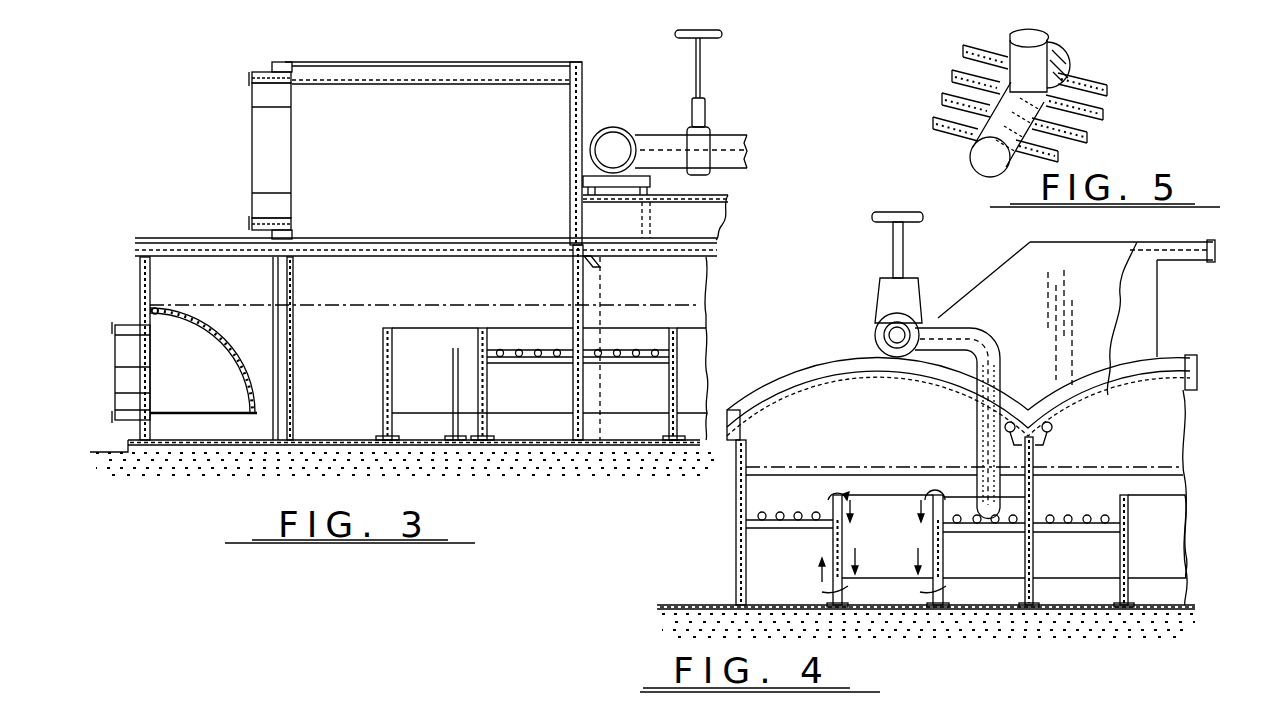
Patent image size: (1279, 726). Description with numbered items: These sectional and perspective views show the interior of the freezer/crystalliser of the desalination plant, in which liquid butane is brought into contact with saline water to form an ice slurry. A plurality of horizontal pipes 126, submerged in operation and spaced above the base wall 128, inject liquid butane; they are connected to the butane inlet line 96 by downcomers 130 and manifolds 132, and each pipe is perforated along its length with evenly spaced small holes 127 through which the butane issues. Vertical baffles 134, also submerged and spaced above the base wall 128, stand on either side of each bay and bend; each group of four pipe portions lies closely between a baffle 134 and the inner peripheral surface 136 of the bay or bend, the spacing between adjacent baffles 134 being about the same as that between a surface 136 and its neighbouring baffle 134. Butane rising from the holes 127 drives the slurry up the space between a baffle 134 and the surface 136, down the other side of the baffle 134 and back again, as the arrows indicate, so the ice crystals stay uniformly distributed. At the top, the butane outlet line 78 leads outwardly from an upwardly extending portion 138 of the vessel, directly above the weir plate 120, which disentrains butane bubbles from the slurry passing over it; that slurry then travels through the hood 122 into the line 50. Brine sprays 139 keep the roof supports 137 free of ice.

In FIG. 3, the line 50 is at (127, 323).
In FIG. 3, the butane outlet line 78 is at (268, 78).
In FIG. 3, the butane inlet line 96 is at (643, 148).
In FIG. 4, the butane inlet line 96 is at (875, 332).
In FIG. 3, the weir plate 120 is at (296, 316).
In FIG. 3, the hood 122 is at (207, 314).
In FIG. 5, the horizontal pipes 126 is at (962, 48).
In FIG. 4, the horizontal pipes 126 is at (760, 512).
In FIG. 5, the small holes 127 is at (936, 121).
In FIG. 4, the small holes 127 is at (1050, 522).
In FIG. 3, the base wall 128 is at (316, 440).
In FIG. 4, the base wall 128 is at (822, 605).
In FIG. 5, the downcomers 130 is at (1030, 50).
In FIG. 4, the downcomers 130 is at (977, 413).
In FIG. 5, the manifolds 132 is at (1075, 58).
In FIG. 4, the manifolds 132 is at (1008, 513).
In FIG. 3, the vertical baffles 134 is at (388, 332).
In FIG. 4, the vertical baffles 134 is at (930, 510).
In FIG. 4, the inner peripheral surface 136 is at (1037, 457).
In FIG. 3, the roof supports 137 is at (585, 325).
In FIG. 4, the roof supports 137 is at (1037, 550).
In FIG. 3, the upwardly extending portion 138 is at (396, 62).
In FIG. 3, the sprays 139 is at (592, 262).
In FIG. 4, the sprays 139 is at (1005, 428).